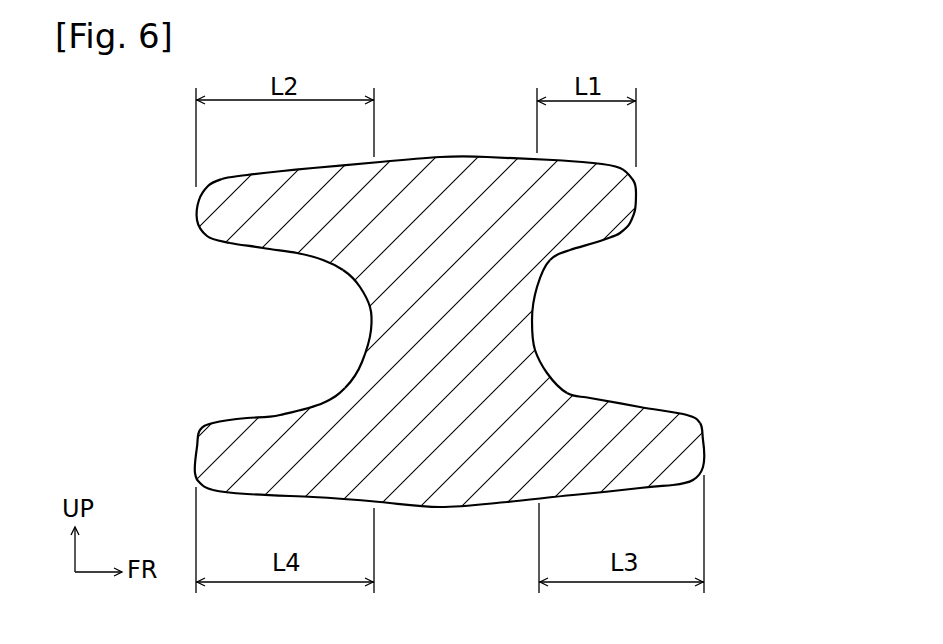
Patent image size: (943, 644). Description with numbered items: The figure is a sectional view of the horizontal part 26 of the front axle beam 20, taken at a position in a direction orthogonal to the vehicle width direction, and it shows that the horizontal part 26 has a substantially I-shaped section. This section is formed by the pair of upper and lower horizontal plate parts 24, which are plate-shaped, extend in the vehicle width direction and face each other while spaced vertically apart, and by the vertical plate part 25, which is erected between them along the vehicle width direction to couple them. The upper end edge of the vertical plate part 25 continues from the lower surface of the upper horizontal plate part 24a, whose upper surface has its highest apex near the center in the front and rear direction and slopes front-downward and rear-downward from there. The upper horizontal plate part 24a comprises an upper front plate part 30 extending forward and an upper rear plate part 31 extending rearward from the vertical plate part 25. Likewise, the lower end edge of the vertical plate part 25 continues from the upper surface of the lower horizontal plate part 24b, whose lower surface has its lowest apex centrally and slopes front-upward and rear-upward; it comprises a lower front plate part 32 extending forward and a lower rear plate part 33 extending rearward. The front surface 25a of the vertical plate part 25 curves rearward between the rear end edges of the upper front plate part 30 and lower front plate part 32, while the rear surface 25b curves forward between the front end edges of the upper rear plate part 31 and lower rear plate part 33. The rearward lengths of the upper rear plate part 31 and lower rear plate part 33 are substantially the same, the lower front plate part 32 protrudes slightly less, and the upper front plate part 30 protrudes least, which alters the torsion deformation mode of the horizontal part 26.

The front axle beam 20 is at (445, 510).
The pair of upper and lower horizontal plate parts 24 is at (447, 333).
The upper horizontal plate part 24a is at (252, 251).
The lower horizontal plate part 24b is at (625, 401).
The vertical plate part 25 is at (452, 326).
The front surface 25a is at (537, 345).
The rear surface 25b is at (360, 295).
The horizontal part 26 is at (463, 151).
The upper front plate part 30 is at (638, 206).
The upper rear plate part 31 is at (196, 218).
The lower front plate part 32 is at (705, 450).
The lower rear plate part 33 is at (196, 461).